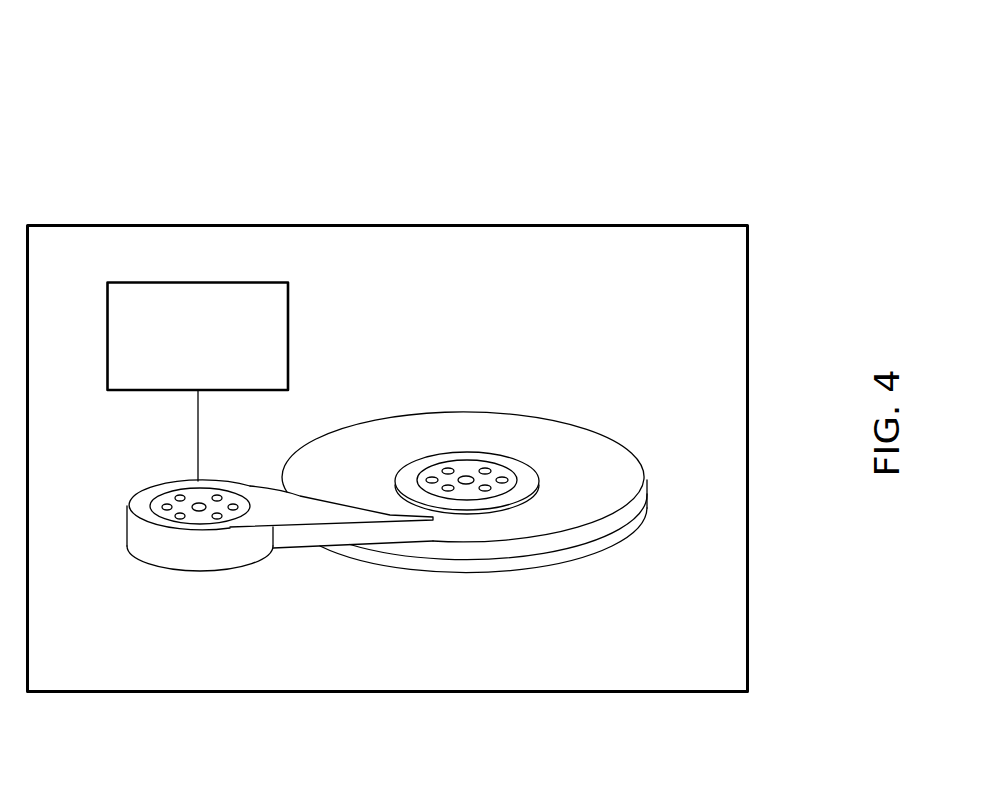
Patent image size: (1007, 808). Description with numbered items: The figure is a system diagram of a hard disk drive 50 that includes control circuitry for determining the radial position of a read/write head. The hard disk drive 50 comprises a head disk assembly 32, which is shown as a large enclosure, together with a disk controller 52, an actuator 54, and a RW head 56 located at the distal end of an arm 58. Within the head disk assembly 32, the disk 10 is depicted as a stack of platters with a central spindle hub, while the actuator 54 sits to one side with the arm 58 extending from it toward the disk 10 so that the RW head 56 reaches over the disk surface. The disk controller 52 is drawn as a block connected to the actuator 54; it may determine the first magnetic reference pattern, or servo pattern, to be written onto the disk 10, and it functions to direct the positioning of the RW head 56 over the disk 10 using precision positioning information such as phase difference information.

The hard disk drive 50 is at (578, 130).
The head disk assembly 32 is at (370, 296).
The disk controller 52 is at (182, 382).
The disk 10 is at (641, 460).
The RW head 56 is at (403, 513).
The actuator 54 is at (137, 497).
The arm 58 is at (283, 492).